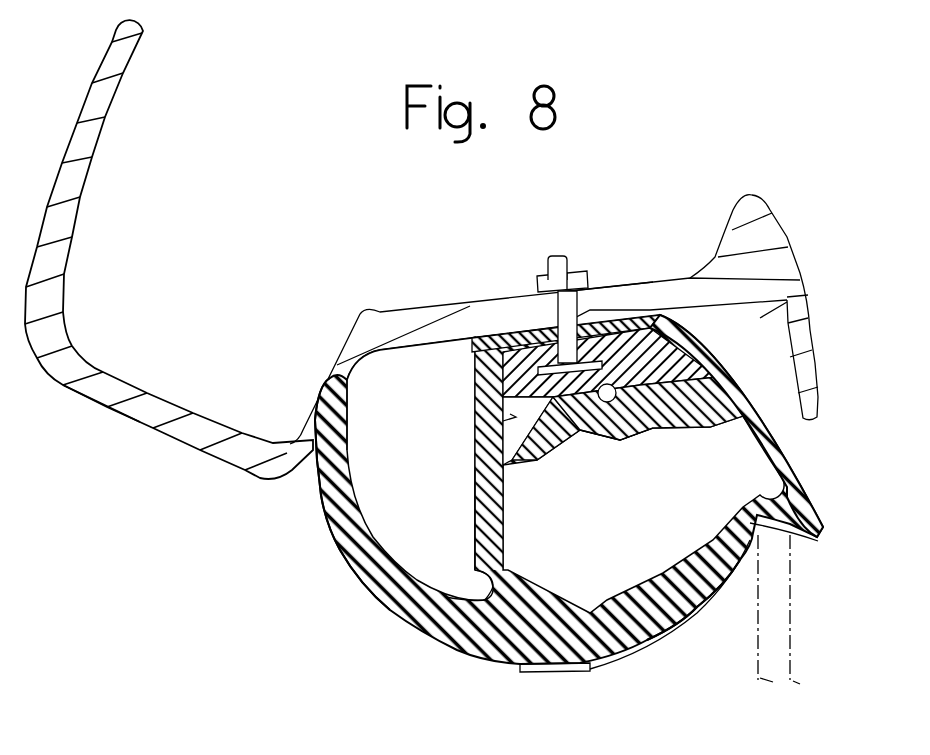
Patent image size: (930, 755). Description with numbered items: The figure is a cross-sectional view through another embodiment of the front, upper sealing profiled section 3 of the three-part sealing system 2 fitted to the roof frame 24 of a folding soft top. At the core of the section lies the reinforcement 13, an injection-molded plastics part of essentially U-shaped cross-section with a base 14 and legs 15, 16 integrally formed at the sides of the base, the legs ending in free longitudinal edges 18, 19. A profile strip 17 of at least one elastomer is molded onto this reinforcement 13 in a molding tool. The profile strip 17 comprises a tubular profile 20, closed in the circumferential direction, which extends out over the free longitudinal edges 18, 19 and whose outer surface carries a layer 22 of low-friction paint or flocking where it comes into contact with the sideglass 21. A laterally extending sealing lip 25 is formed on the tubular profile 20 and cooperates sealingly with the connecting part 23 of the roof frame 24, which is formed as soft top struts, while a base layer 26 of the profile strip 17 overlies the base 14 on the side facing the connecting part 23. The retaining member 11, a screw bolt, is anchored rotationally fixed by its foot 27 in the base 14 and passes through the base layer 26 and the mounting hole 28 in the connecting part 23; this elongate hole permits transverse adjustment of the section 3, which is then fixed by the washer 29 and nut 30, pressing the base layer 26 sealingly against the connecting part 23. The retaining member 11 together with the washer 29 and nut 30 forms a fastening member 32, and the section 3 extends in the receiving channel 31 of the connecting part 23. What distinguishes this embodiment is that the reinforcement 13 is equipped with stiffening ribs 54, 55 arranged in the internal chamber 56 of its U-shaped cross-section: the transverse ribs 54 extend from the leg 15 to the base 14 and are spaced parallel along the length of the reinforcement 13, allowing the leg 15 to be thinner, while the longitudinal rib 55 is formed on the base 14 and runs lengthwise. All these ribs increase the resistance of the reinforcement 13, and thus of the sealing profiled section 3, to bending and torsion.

The sealing system 2 is at (423, 638).
The front, upper sealing profiled section 3 is at (372, 597).
The retaining member 11 is at (620, 286).
The reinforcement 13 is at (467, 452).
The base 14 is at (473, 382).
The leg 15 is at (473, 477).
The leg 16 is at (702, 347).
The profile strip 17 is at (695, 610).
The free longitudinal edge 18 is at (469, 588).
The free longitudinal edge 19 is at (710, 425).
The tubular profile 20 is at (652, 641).
The sideglass 21 is at (793, 563).
The layer of low-friction paint or flocking 22 is at (592, 670).
The connecting part 23 is at (167, 437).
The roof frame 24 is at (97, 408).
The sealing lip 25 is at (321, 534).
The base layer 26 is at (475, 352).
The foot 27 is at (600, 437).
The mounting hole 28 is at (473, 311).
The washer 29 is at (537, 291).
The nut 30 is at (548, 262).
The receiving channel 31 is at (811, 291).
The fastening member 32 is at (578, 268).
The stiffening ribs 54 is at (558, 452).
The stiffening rib 55 is at (613, 430).
The internal chamber 56 is at (475, 418).